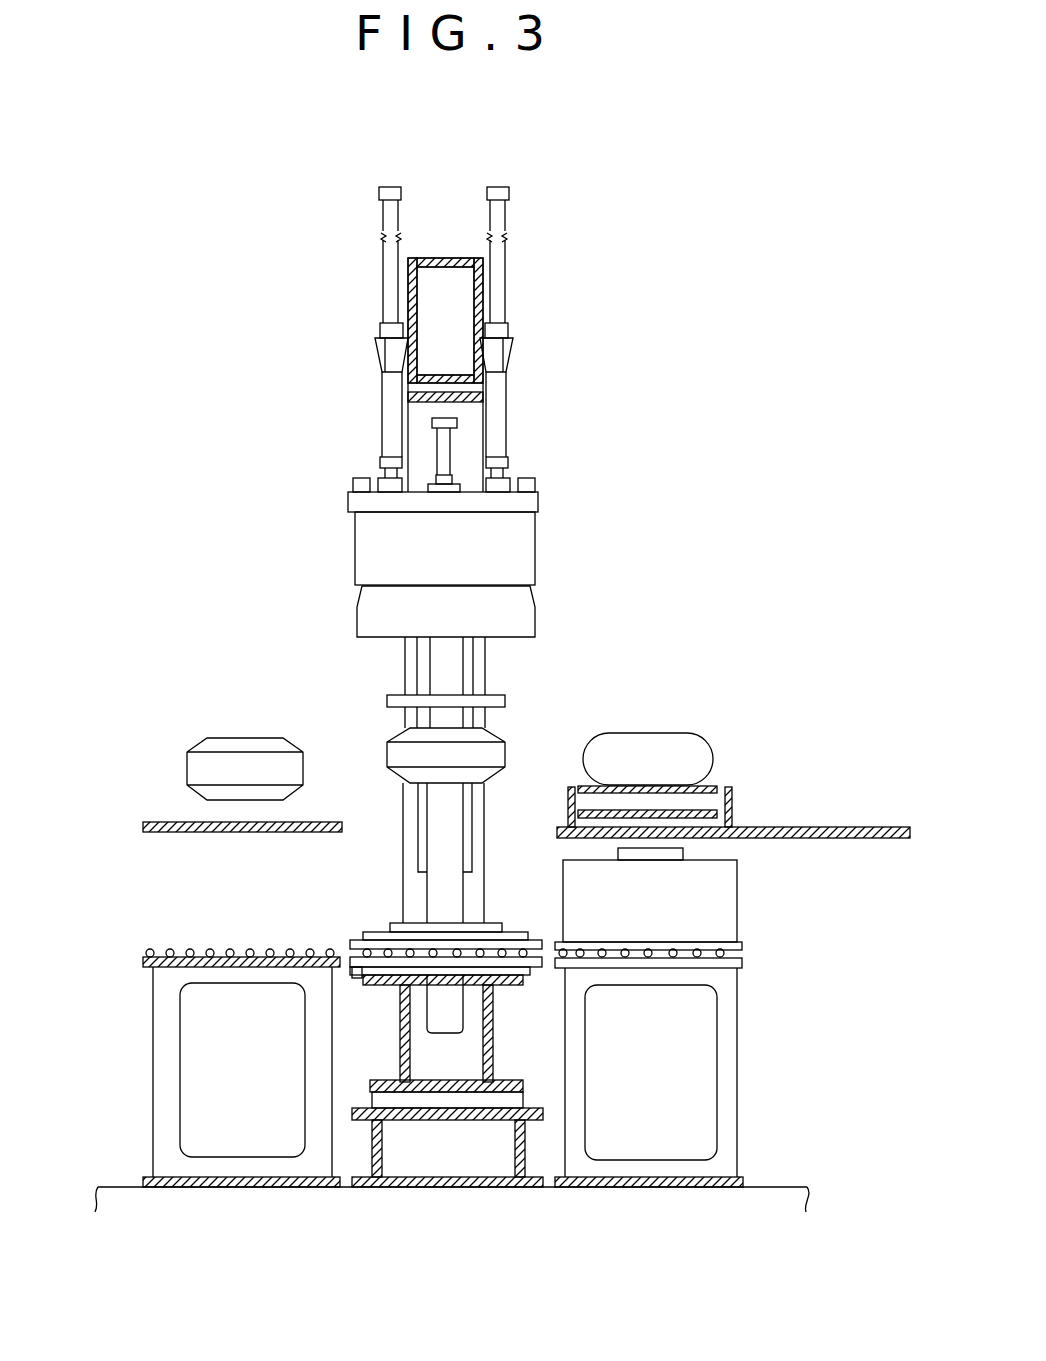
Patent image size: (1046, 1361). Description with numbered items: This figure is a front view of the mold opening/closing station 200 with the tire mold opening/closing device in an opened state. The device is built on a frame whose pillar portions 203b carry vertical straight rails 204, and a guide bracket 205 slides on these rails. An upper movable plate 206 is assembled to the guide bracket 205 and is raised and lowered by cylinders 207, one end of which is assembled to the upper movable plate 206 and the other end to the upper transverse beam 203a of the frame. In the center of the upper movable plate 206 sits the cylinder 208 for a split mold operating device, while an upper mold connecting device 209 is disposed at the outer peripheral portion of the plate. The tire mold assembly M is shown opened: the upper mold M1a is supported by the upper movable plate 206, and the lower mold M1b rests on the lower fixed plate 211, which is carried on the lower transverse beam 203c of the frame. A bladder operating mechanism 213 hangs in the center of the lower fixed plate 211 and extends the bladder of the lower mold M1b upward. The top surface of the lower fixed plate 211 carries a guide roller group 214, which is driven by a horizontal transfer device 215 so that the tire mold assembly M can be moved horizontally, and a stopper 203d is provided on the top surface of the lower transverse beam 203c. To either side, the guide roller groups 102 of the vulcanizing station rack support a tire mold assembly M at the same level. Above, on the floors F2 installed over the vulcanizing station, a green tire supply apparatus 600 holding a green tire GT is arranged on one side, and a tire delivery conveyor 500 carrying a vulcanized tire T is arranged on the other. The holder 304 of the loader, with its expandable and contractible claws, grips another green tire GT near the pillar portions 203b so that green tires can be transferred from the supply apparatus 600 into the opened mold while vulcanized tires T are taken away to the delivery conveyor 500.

The cylinders 207 is at (381, 214).
The transverse beam 203a is at (483, 293).
The mold opening/closing station 200 is at (585, 346).
The guide bracket 205 is at (483, 400).
The cylinder for a split mold operating device 208 is at (446, 442).
The upper mold connecting device 209 is at (535, 478).
The upper movable plate 206 is at (530, 503).
The upper mold M1a is at (331, 497).
The vertical straight rails 204 is at (475, 652).
The pillar portions 203b is at (486, 668).
The holder 304 is at (505, 701).
The green tire supply apparatus 600 is at (140, 725).
The green tire GT is at (249, 738).
The vulcanized tire T is at (690, 735).
The tire delivery conveyor 500 is at (715, 784).
The floors F2 is at (192, 822).
The lower mold M1b is at (400, 920).
The guide roller group 214 is at (555, 975).
The horizontal transfer device 215 is at (352, 975).
The guide roller groups 102 is at (148, 950).
The tire mold assembly M is at (725, 905).
The lower fixed plate 211 is at (542, 975).
The stopper 203d is at (493, 1040).
The lower transverse beam 203c is at (512, 1060).
The bladder operating mechanism 213 is at (447, 1026).